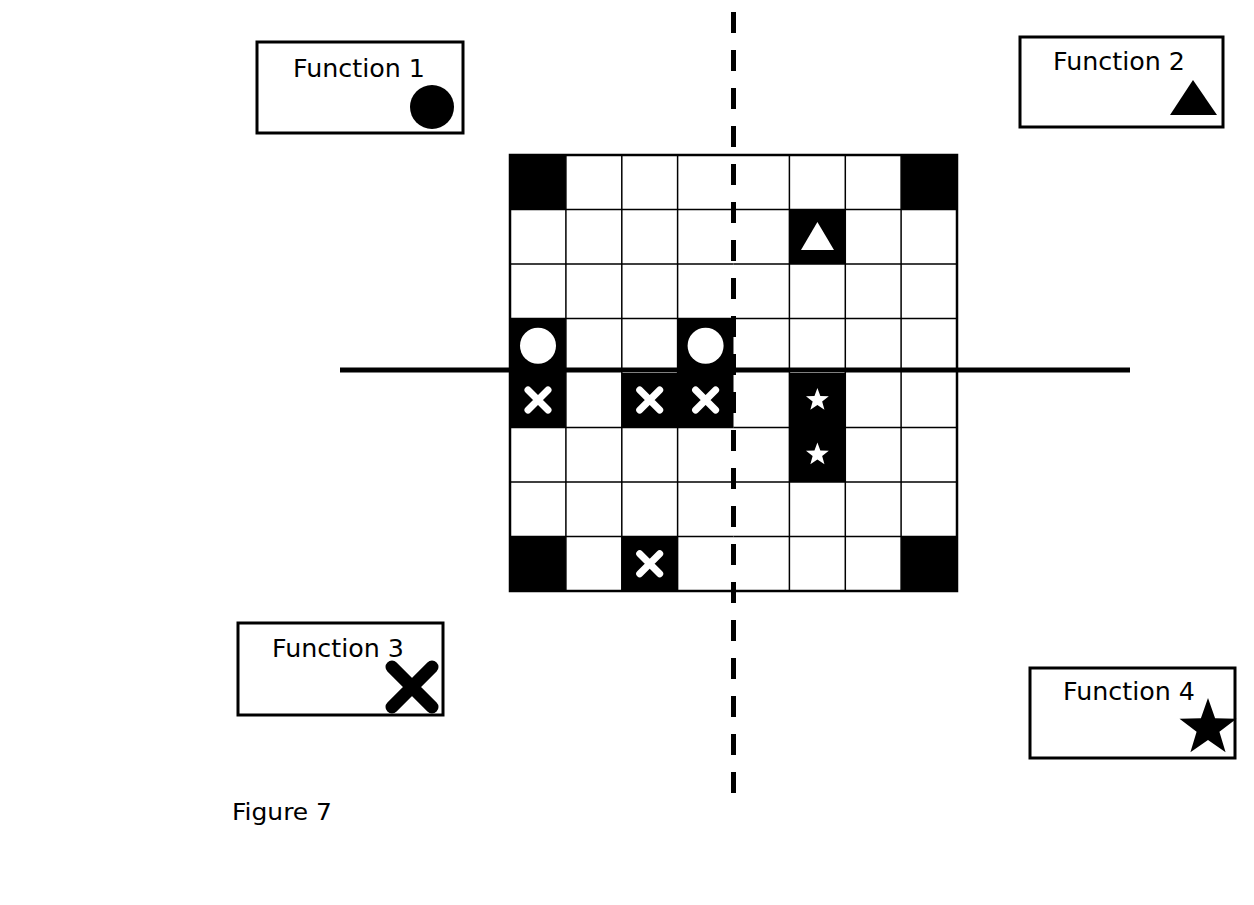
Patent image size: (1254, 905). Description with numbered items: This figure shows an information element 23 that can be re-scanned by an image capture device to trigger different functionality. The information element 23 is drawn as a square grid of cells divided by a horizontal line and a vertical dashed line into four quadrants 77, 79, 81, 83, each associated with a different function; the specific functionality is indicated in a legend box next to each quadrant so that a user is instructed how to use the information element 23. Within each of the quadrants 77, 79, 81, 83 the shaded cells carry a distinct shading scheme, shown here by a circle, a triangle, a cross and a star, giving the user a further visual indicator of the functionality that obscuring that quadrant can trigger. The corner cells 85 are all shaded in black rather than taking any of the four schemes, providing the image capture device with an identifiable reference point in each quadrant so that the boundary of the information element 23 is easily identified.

The information element 23 is at (802, 125).
The first quadrant 77 is at (458, 295).
The second quadrant 79 is at (992, 315).
The third quadrant 81 is at (648, 642).
The fourth quadrant 83 is at (990, 482).
The corner cells 85 is at (507, 182).